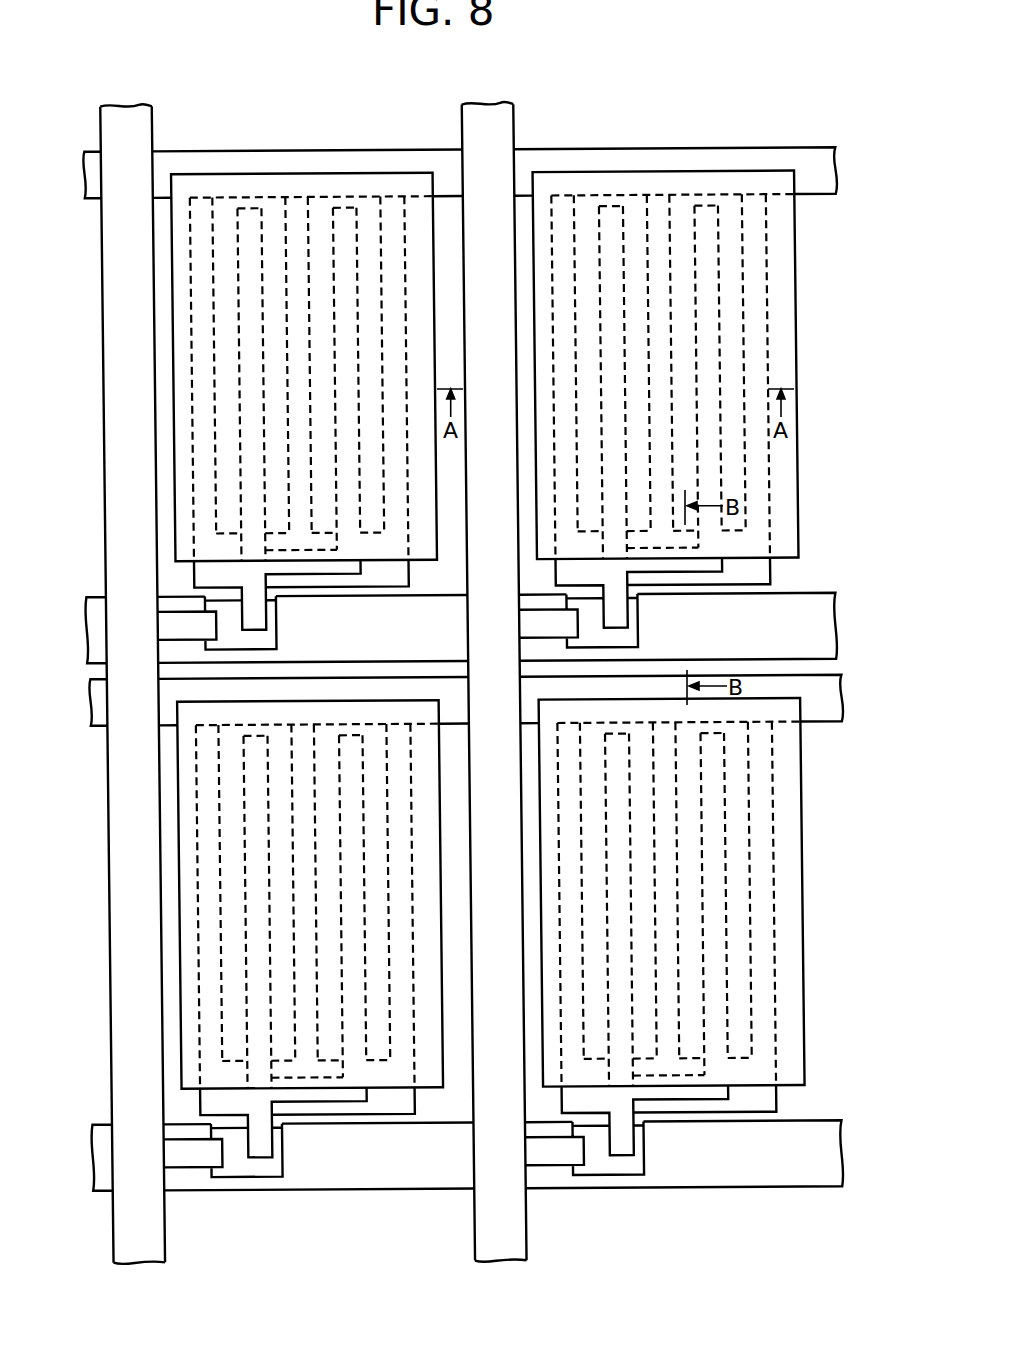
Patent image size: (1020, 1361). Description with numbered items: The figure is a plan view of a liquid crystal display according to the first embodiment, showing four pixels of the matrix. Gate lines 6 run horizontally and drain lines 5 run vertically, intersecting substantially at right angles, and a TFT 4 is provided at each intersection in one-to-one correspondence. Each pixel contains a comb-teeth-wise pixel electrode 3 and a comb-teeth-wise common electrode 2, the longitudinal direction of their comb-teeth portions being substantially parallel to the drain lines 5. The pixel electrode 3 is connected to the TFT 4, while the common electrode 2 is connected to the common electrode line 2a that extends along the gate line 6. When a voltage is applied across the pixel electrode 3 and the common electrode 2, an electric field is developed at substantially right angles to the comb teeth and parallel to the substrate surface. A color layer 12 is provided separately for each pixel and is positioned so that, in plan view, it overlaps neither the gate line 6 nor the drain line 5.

The common electrode 2 is at (558, 227).
The common electrode line 2a is at (285, 167).
The pixel electrode 3 is at (705, 227).
The TFT 4 is at (220, 626).
The drain line 5 is at (140, 1208).
The gate line 6 is at (833, 622).
The color layer 12 is at (388, 183).